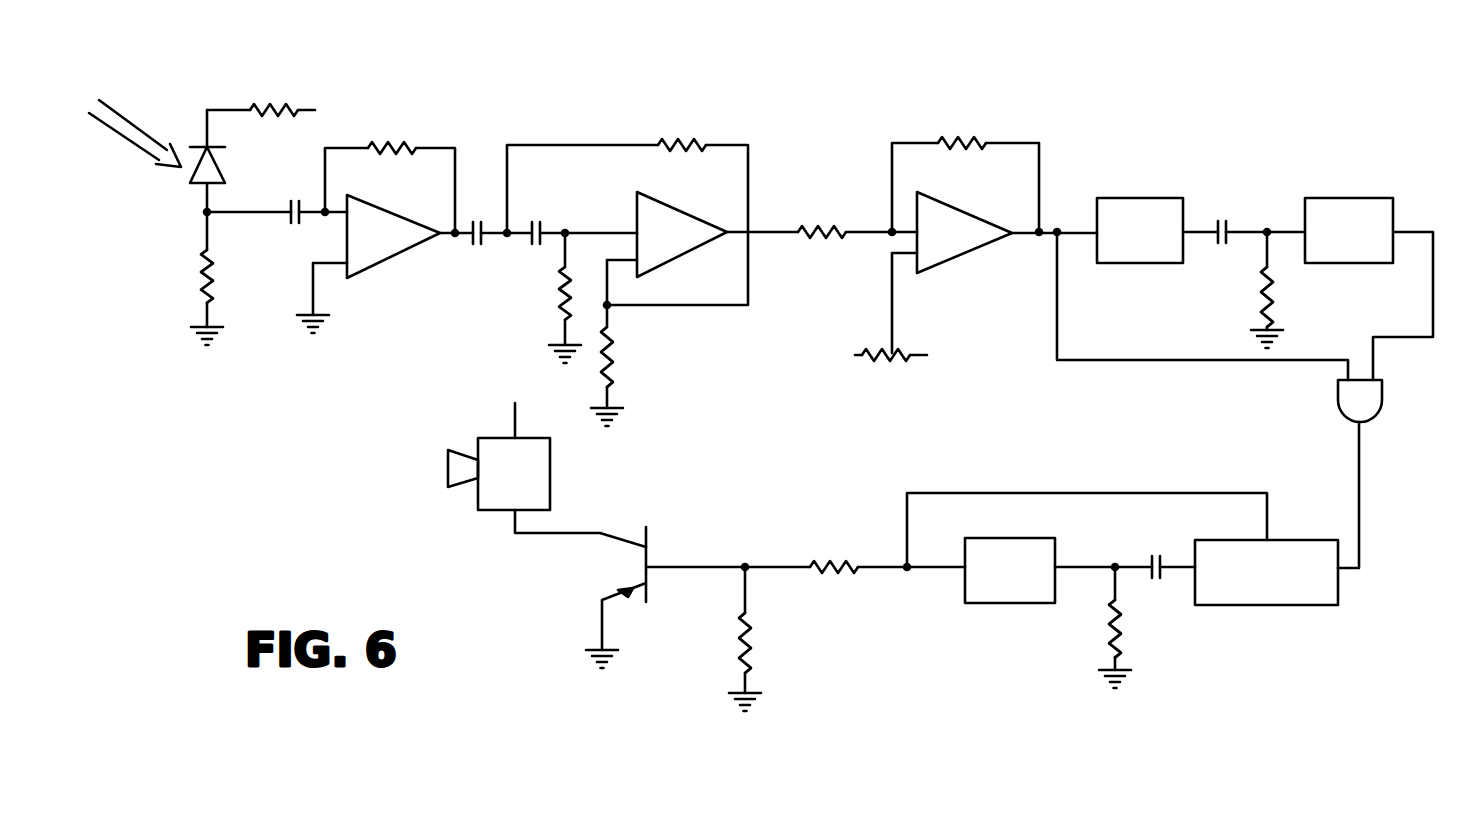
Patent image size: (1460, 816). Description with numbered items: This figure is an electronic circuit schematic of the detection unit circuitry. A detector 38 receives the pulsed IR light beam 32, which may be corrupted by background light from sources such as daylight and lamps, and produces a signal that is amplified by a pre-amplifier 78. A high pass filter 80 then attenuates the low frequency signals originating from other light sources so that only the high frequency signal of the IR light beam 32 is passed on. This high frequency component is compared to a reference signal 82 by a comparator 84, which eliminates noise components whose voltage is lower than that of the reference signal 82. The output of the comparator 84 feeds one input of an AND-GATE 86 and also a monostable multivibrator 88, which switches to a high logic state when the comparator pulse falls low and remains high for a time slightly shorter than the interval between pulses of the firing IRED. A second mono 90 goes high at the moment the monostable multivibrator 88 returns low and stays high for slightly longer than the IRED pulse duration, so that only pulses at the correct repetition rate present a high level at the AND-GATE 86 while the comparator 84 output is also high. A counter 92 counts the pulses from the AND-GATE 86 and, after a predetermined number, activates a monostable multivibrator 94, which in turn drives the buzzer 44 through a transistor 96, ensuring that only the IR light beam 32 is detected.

The IR light beam 32 is at (148, 128).
The detector 38 is at (193, 183).
The pre-amplifier 78 is at (388, 258).
The high pass filter 80 is at (578, 189).
The comparator 84 is at (940, 255).
The reference signal 82 is at (889, 382).
The monostable multivibrator 88 is at (1142, 198).
The mono 90 is at (1367, 198).
The AND-GATE 86 is at (1378, 400).
The buzzer 44 is at (550, 478).
The transistor 96 is at (642, 626).
The monostable multivibrator 94 is at (980, 593).
The counter 92 is at (1260, 597).